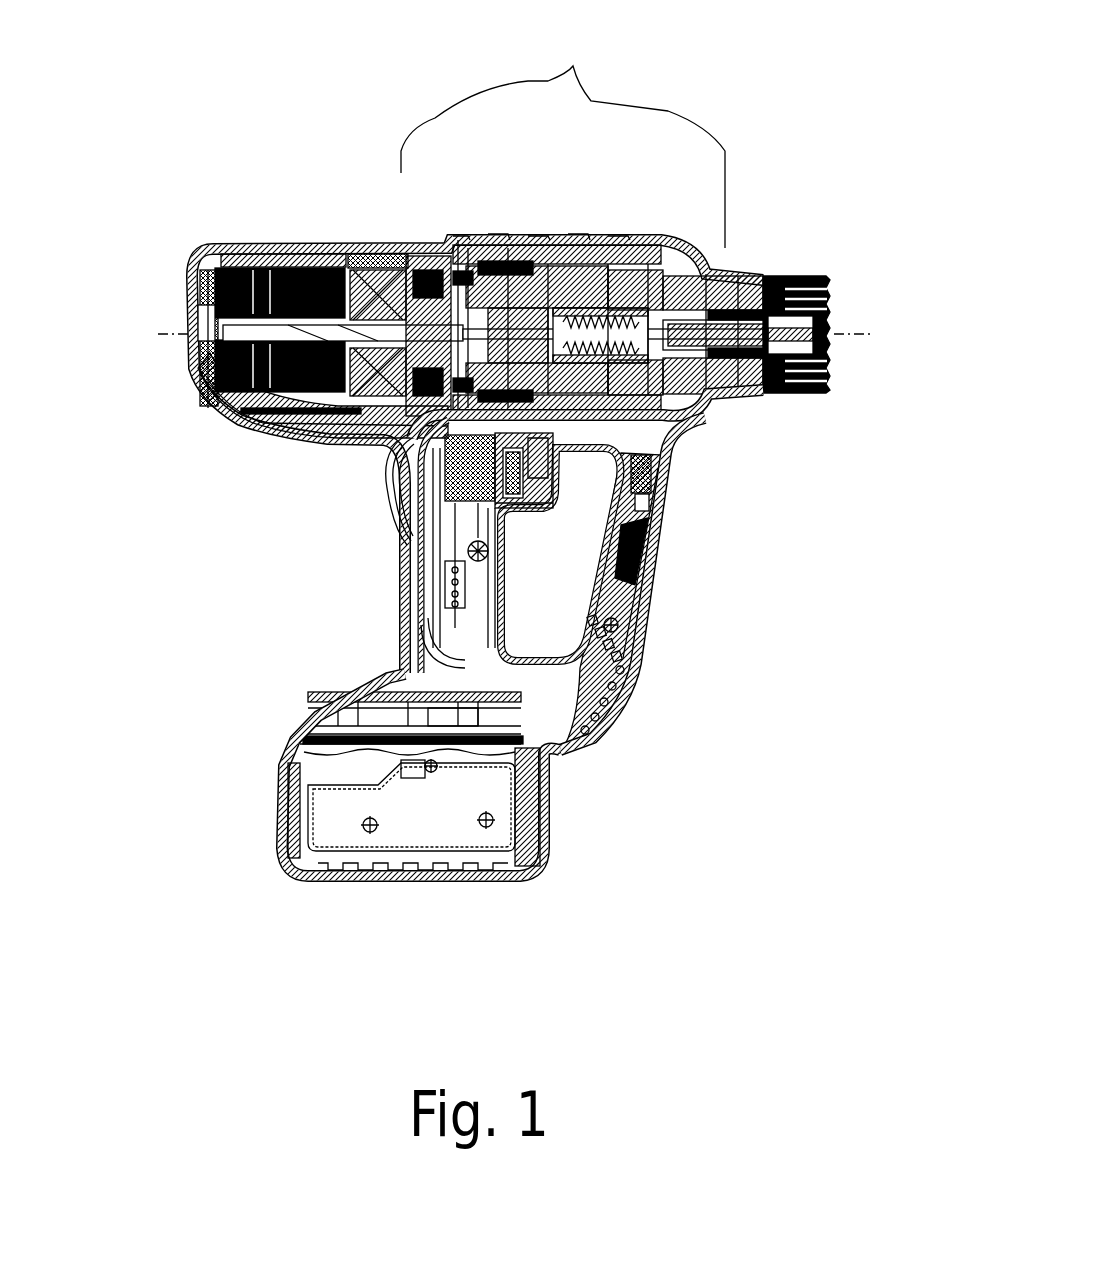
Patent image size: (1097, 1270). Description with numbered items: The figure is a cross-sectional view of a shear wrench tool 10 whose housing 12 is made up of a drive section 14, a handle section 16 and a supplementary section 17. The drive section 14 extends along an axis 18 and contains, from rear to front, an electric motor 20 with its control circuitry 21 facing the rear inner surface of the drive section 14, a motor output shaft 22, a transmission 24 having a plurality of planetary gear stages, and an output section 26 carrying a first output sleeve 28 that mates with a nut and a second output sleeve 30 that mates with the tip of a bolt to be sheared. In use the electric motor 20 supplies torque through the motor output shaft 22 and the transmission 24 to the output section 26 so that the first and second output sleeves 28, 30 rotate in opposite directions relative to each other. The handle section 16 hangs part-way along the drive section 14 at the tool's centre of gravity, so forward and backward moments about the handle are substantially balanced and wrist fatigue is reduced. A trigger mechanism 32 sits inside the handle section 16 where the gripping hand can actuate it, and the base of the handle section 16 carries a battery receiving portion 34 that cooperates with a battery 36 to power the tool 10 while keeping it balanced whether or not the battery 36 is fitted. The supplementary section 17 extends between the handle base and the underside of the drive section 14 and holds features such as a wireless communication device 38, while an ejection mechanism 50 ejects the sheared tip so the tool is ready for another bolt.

The shear wrench tool 10 is at (536, 190).
The housing 12 is at (665, 236).
The drive section 14 is at (133, 245).
The handle section 16 is at (397, 570).
The supplementary section 17 is at (645, 577).
The axis 18 is at (925, 313).
The electric motor 20 is at (293, 237).
The control circuitry 21 is at (207, 407).
The motor output shaft 22 is at (347, 240).
The transmission 24 is at (563, 220).
The output section 26 is at (855, 402).
The first output sleeve 28 is at (827, 270).
The second output sleeve 30 is at (785, 385).
The trigger mechanism 32 is at (540, 500).
The battery receiving portion 34 is at (533, 753).
The battery 36 is at (400, 830).
The wireless communication device 38 is at (648, 553).
The ejection mechanism 50 is at (658, 420).